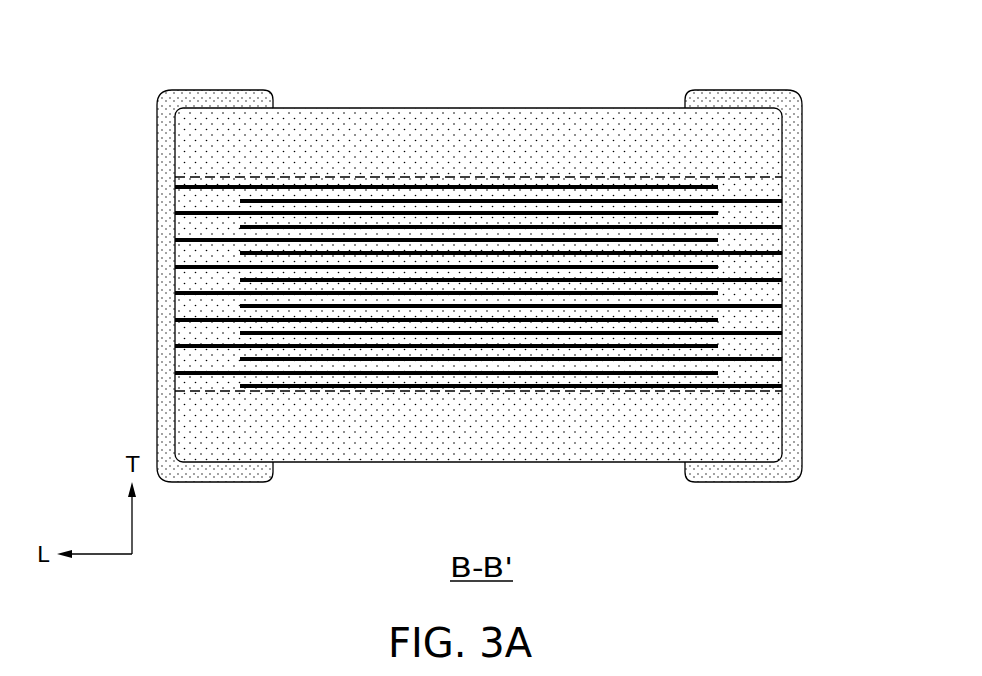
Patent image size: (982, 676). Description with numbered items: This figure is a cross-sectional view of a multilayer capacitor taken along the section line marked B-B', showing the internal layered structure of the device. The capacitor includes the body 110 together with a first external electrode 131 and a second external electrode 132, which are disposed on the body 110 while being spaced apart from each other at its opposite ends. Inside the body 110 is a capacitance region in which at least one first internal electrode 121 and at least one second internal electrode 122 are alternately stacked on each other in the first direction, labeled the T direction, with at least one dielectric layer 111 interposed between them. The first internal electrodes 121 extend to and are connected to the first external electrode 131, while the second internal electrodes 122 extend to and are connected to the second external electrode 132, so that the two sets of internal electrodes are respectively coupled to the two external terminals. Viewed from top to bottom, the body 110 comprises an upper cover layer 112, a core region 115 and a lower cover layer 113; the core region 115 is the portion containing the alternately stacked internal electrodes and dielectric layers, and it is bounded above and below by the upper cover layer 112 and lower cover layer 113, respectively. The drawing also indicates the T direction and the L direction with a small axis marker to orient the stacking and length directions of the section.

The body 110 is at (592, 108).
The dielectric layer 111 is at (490, 185).
The upper cover layer 112 is at (418, 133).
The lower cover layer 113 is at (558, 445).
The core region 115 is at (342, 178).
The first internal electrode 121 is at (196, 220).
The second internal electrode 122 is at (765, 226).
The first external electrode 131 is at (165, 170).
The second external electrode 132 is at (793, 148).